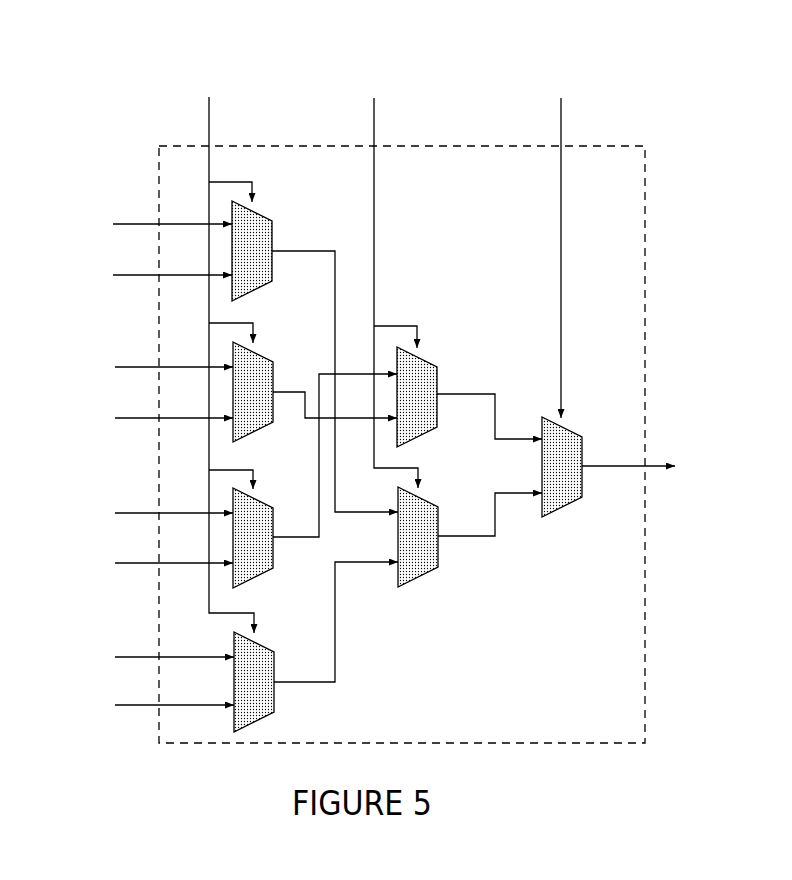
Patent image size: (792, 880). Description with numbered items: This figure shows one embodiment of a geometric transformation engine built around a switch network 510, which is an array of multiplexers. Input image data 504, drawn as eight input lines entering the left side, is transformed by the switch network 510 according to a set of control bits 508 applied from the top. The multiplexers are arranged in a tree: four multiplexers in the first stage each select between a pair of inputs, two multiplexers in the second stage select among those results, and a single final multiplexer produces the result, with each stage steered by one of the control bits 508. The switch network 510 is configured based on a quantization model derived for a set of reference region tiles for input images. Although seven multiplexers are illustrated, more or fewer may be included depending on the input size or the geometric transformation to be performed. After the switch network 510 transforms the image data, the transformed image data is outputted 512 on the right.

The input image data 504 is at (135, 191).
The control bits 508 is at (465, 46).
The switch network 510 is at (622, 733).
The transformed image data output 512 is at (784, 475).